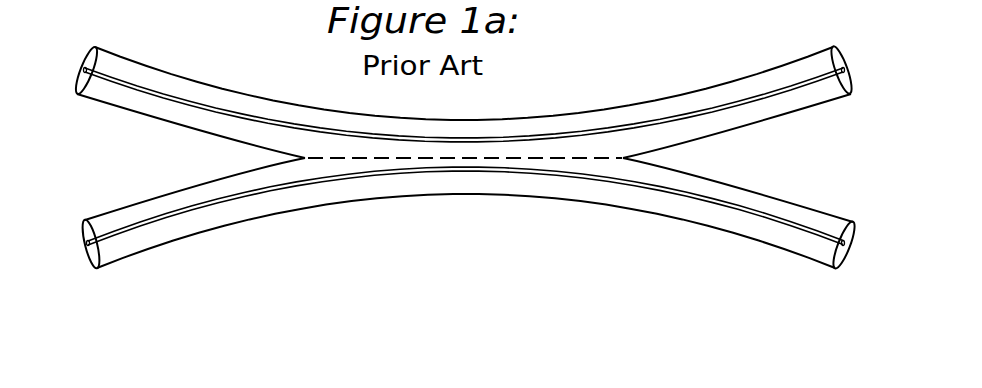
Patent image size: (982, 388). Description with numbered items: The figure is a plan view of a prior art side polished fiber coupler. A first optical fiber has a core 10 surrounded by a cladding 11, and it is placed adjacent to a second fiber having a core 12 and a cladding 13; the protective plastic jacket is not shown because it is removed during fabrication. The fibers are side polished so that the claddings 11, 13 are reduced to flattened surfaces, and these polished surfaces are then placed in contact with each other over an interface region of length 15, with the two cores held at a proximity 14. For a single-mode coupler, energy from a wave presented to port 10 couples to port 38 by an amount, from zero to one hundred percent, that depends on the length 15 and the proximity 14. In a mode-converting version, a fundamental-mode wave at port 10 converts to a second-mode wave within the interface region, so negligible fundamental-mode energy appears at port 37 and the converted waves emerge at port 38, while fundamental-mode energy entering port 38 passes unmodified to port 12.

The core 10 is at (84, 70).
The cladding 11 is at (100, 46).
The core 12 is at (87, 243).
The cladding 13 is at (90, 219).
The proximity 14 is at (462, 186).
The length 15 is at (547, 158).
The port 37 is at (845, 71).
The port 38 is at (845, 243).